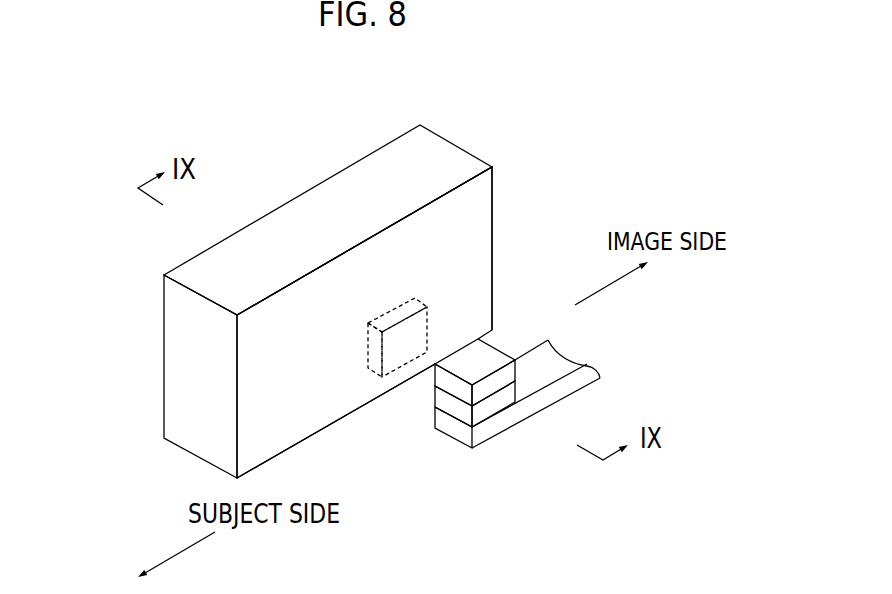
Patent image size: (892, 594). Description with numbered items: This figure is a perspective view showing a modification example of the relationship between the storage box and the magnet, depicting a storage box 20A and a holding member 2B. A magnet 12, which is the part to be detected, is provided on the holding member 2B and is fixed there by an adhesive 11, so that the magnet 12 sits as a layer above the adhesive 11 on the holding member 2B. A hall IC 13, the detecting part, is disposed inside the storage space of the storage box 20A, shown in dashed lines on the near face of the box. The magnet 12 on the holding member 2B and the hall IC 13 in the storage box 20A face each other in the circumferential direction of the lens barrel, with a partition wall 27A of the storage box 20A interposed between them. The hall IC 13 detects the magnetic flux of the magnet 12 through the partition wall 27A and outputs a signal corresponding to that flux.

The storage box 20A is at (450, 165).
The partition wall 27A is at (312, 395).
The hall IC 13 is at (366, 342).
The magnet 12 is at (493, 360).
The adhesive 11 is at (457, 410).
The holding member 2B is at (498, 423).